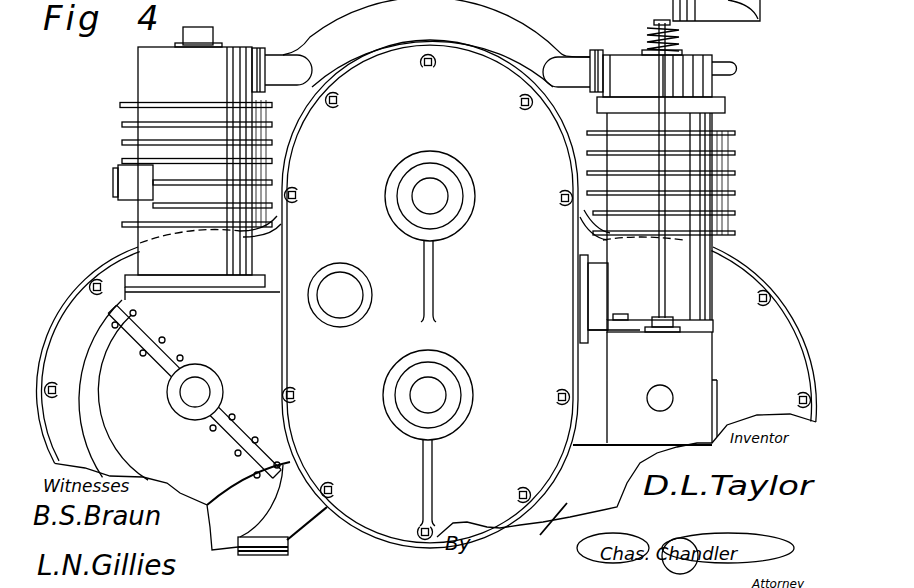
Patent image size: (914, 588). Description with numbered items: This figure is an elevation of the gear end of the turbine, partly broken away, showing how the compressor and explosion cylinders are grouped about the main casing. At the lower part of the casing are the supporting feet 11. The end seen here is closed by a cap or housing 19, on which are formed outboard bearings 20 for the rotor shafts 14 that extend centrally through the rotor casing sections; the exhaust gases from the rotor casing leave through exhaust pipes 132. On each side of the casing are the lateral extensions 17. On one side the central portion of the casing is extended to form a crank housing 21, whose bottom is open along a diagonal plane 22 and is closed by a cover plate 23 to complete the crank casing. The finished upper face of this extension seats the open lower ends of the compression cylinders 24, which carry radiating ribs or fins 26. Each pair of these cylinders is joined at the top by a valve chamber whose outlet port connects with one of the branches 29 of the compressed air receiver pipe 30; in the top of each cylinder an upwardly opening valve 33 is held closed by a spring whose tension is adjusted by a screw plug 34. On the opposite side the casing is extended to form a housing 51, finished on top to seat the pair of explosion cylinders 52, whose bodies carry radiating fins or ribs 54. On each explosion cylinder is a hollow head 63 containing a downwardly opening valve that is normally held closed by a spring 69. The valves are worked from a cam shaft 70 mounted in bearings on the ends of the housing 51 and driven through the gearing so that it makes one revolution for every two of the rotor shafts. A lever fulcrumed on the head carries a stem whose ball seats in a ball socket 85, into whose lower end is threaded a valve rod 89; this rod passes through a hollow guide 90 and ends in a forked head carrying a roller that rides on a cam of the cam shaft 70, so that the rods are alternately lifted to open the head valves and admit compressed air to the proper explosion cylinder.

The supporting feet 11 is at (273, 538).
The rotor shaft 14 is at (428, 190).
The lateral extensions 17 is at (82, 307).
The cap or housing 19 is at (430, 294).
The outboard bearings 20 is at (471, 200).
The crank housing 21 is at (167, 358).
The diagonal plane 22 is at (194, 391).
The cover plate 23 is at (123, 390).
The compression cylinders 24 is at (165, 132).
The radiating ribs or fins 26 is at (122, 124).
The branches 29 is at (282, 78).
The compressed air receiver pipe 30 is at (413, 27).
The upwardly opening valve 33 is at (195, 392).
The plug 34 is at (187, 33).
The housing 51 is at (710, 370).
The explosion cylinders 52 is at (707, 182).
The radiating fins or ribs 54 is at (735, 155).
The hollow head 63 is at (690, 80).
The spring 69 is at (677, 33).
The cam shaft 70 is at (660, 398).
The ball socket 85 is at (660, 23).
The valve rod 89 is at (659, 287).
The hollow guide 90 is at (662, 322).
The exhaust pipes 132 is at (347, 303).